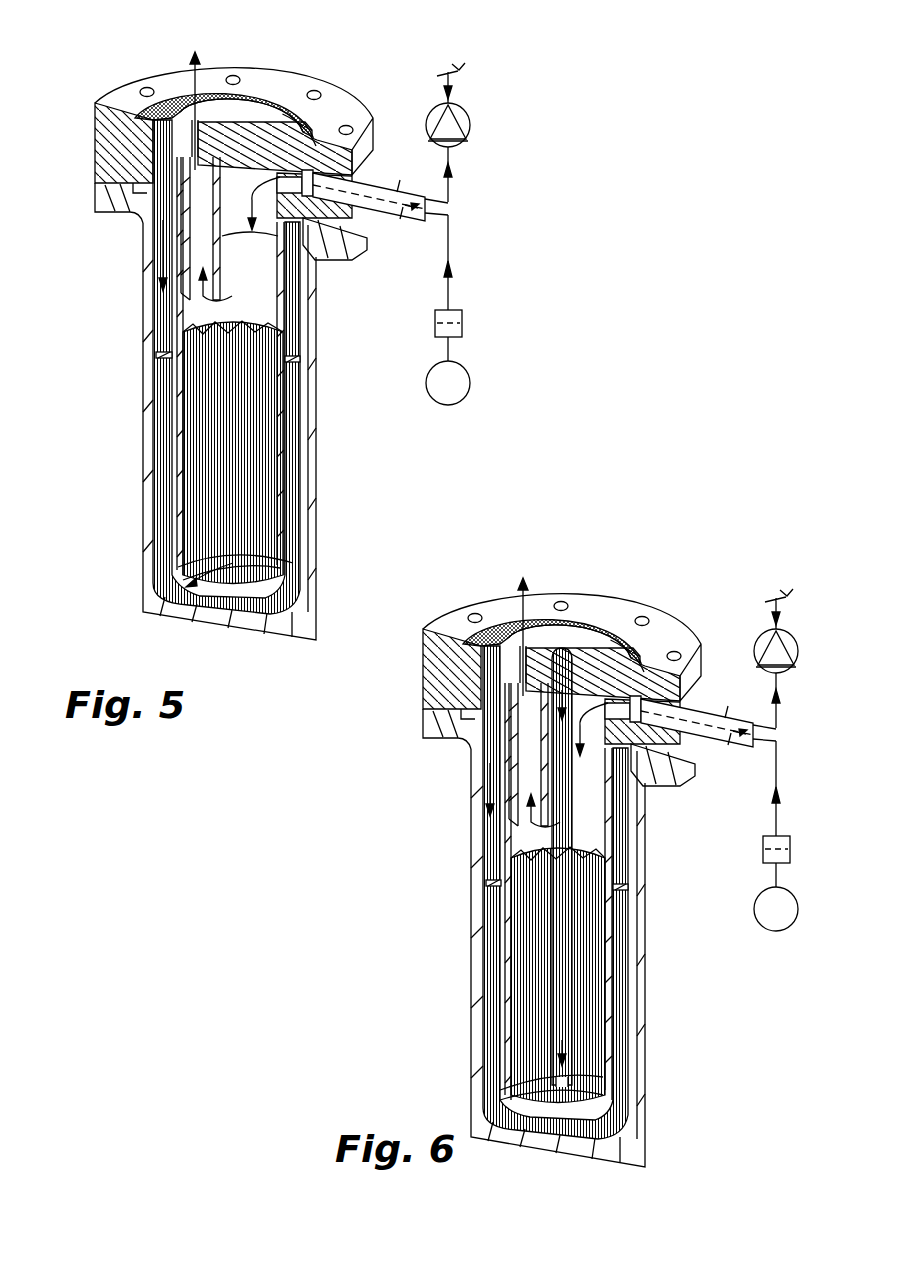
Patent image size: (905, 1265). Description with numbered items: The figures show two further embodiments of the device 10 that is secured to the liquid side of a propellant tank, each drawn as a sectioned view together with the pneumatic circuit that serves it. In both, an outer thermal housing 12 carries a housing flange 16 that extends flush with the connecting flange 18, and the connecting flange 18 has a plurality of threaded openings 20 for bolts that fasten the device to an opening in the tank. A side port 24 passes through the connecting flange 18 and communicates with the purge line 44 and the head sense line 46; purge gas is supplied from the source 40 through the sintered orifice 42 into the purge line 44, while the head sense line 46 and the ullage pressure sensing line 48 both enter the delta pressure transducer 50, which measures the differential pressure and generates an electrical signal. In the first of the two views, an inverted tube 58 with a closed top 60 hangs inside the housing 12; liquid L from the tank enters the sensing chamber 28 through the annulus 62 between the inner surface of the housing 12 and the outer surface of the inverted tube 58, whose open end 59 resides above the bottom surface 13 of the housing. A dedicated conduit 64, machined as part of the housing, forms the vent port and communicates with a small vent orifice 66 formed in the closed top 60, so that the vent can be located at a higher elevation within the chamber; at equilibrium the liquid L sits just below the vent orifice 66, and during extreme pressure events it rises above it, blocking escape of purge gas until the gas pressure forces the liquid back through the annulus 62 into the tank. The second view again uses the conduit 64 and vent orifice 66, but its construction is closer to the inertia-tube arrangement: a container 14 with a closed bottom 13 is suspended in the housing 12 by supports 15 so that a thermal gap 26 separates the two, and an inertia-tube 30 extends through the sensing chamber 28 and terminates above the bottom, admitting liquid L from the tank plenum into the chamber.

In FIG. 5, the device 10 is at (76, 104).
In FIG. 6, the device 10 is at (595, 523).
In FIG. 5, the thermal housing 12 is at (140, 410).
In FIG. 6, the thermal housing 12 is at (468, 1042).
In FIG. 6, the bottom surface 13 is at (585, 1100).
In FIG. 6, the container 14 is at (497, 955).
In FIG. 5, the supports 15 is at (163, 358).
In FIG. 6, the supports 15 is at (492, 886).
In FIG. 5, the housing flange 16 is at (117, 220).
In FIG. 6, the housing flange 16 is at (564, 775).
In FIG. 5, the connecting flange 18 is at (370, 142).
In FIG. 6, the connecting flange 18 is at (556, 669).
In FIG. 5, the threaded openings 20 is at (147, 86).
In FIG. 6, the threaded openings 20 is at (558, 611).
In FIG. 5, the side port 24 is at (388, 180).
In FIG. 6, the side port 24 is at (676, 714).
In FIG. 6, the thermal gap 26 is at (490, 1002).
In FIG. 5, the sensing chamber 28 is at (263, 274).
In FIG. 6, the inertia-tube 30 is at (547, 930).
In FIG. 5, the purge gas source 40 is at (470, 380).
In FIG. 6, the purge gas source 40 is at (789, 920).
In FIG. 5, the sintered orifice 42 is at (462, 318).
In FIG. 6, the sintered orifice 42 is at (801, 849).
In FIG. 5, the purge line 44 is at (450, 248).
In FIG. 6, the purge line 44 is at (806, 788).
In FIG. 5, the head sense line 46 is at (450, 190).
In FIG. 6, the head sense line 46 is at (806, 701).
In FIG. 5, the ullage pressure sensing line 48 is at (470, 89).
In FIG. 6, the ullage pressure sensing line 48 is at (802, 610).
In FIG. 5, the delta pressure transducer 50 is at (470, 126).
In FIG. 6, the delta pressure transducer 50 is at (799, 651).
In FIG. 5, the inverted tube 58 is at (172, 462).
In FIG. 5, the edge 59 is at (232, 563).
In FIG. 5, the closed top 60 is at (247, 113).
In FIG. 6, the closed top 60 is at (575, 606).
In FIG. 5, the annulus 62 is at (162, 528).
In FIG. 5, the conduit 64 is at (190, 243).
In FIG. 6, the conduit 64 is at (507, 803).
In FIG. 5, the vent orifice 66 is at (200, 118).
In FIG. 6, the vent orifice 66 is at (548, 640).
In FIG. 5, the liquid L is at (253, 308).
In FIG. 6, the liquid L is at (597, 817).